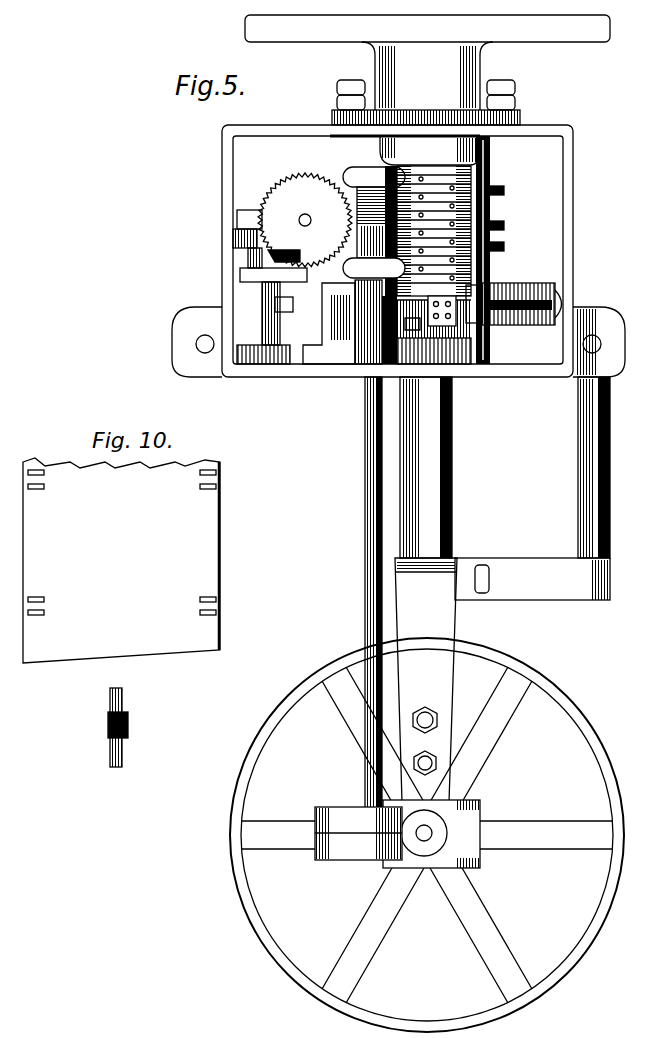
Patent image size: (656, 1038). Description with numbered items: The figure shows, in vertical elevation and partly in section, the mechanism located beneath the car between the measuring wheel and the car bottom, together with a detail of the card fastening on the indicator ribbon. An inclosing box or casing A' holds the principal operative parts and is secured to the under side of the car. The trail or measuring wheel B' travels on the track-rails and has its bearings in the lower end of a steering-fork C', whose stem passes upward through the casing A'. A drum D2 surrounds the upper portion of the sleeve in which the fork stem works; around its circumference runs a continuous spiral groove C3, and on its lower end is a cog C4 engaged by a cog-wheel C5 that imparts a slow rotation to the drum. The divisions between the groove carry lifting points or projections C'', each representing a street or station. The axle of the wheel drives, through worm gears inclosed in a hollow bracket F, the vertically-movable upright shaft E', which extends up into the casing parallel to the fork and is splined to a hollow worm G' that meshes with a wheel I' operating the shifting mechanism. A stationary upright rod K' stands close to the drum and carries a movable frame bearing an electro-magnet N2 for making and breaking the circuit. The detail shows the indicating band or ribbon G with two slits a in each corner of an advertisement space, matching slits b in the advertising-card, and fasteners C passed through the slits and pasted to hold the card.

In FIG. 5, the inclosing box or casing A' is at (398, 251).
In FIG. 5, the stationary upright rod K' is at (437, 211).
In FIG. 5, the wheel I' is at (305, 220).
In FIG. 5, the hollow worm G' is at (374, 268).
In FIG. 5, the drum D2 is at (434, 231).
In FIG. 5, the steering-fork C' is at (426, 522).
In FIG. 5, the lifting points or projections C'' is at (514, 191).
In FIG. 5, the spiral groove C3 is at (506, 226).
In FIG. 5, the cog C4 is at (412, 328).
In FIG. 5, the cog-wheel C5 is at (248, 352).
In FIG. 5, the electro-magnet N2 is at (518, 282).
In FIG. 5, the vertically-movable upright shaft E' is at (354, 594).
In FIG. 5, the trail or measuring wheel B' is at (427, 835).
In FIG. 5, the hollow bracket F is at (358, 833).
In FIG. 10, the indicating band or ribbon G is at (121, 560).
In FIG. 10, the slits a is at (198, 472).
In FIG. 10, the fasteners C is at (104, 727).
In FIG. 10, the slits b is at (112, 710).